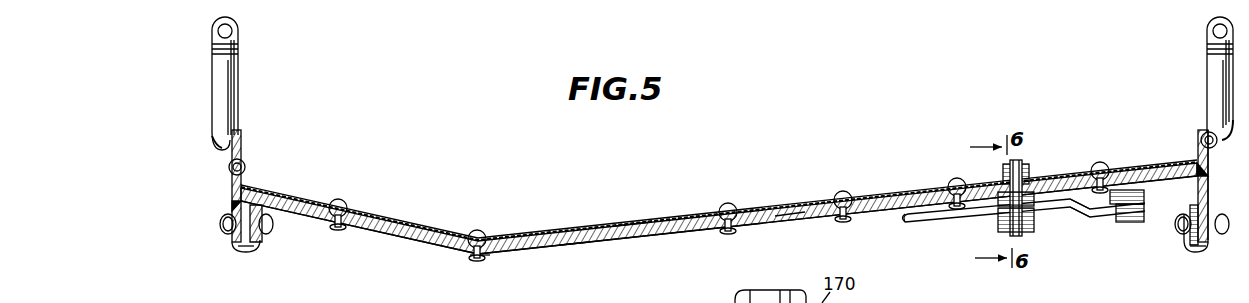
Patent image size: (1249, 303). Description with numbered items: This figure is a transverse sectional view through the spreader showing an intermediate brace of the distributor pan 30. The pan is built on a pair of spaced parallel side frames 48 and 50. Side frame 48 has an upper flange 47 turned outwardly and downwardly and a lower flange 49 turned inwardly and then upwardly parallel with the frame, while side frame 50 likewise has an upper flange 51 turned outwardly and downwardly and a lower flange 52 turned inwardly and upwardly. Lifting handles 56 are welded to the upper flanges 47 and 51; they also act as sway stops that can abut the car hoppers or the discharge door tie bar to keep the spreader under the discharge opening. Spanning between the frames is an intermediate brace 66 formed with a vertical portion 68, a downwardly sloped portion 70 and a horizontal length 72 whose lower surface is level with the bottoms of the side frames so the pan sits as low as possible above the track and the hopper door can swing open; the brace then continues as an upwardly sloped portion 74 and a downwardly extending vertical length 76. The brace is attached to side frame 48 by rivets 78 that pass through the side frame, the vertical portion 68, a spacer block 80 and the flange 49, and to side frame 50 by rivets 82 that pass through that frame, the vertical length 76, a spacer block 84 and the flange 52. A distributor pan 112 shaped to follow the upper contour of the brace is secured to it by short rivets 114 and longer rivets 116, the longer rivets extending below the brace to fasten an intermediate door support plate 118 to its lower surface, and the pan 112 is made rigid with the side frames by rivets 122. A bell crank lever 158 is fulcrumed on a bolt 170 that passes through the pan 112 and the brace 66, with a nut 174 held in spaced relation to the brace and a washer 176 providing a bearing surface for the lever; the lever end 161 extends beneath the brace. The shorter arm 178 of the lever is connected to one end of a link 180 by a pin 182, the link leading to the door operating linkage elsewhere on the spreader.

The distributor pan 30 is at (552, 230).
The upper flange 47 is at (218, 138).
The side frame 48 is at (232, 192).
The lower flange 49 is at (262, 243).
The side frame 50 is at (1209, 185).
The upper flange 51 is at (1222, 62).
The lower flange 52 is at (1195, 250).
The lifting handle 56 is at (222, 65).
The intermediate brace 66 is at (610, 249).
The vertical portion 68 is at (230, 208).
The downwardly sloped portion 70 is at (368, 232).
The horizontal length 72 is at (480, 257).
The upwardly sloped portion 74 is at (573, 246).
The downwardly extending vertical length 76 is at (1210, 205).
The rivet 78 is at (220, 229).
The spacer block 80 is at (242, 250).
The rivet 82 is at (1218, 240).
The spacer block 84 is at (1184, 210).
The distributor pan 112 is at (630, 224).
The short rivet 114 is at (340, 201).
The longer rivet 116 is at (728, 203).
The intermediate door support plate 118 is at (792, 240).
The rivet 122 is at (243, 159).
The bell crank lever 158 is at (940, 222).
The lever end 161 is at (905, 223).
The bolt 170 is at (1026, 177).
The nut 174 is at (1032, 220).
The washer 176 is at (1004, 233).
The shorter arm 178 is at (1088, 222).
The link 180 is at (1138, 190).
The pin 182 is at (1126, 224).